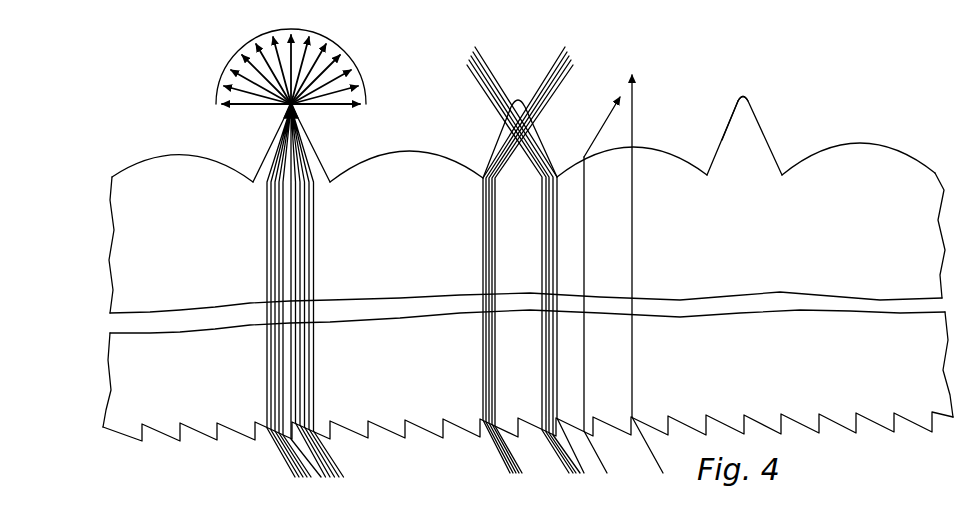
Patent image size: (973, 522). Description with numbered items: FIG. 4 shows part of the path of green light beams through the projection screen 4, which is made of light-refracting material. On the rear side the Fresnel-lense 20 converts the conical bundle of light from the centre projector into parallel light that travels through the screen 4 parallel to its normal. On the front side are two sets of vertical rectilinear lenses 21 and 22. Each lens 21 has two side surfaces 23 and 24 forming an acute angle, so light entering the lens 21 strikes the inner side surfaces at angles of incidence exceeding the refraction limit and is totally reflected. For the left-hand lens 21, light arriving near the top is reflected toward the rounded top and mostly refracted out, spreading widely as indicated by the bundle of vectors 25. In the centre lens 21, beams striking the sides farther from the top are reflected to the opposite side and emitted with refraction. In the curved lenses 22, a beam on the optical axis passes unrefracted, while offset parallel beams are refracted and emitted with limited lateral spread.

The screen 4 is at (922, 235).
The Fresnel-lense 20 is at (425, 430).
The lenses 21 is at (296, 158).
The lenses 22 is at (375, 165).
The side surface 23 is at (731, 118).
The side surface 24 is at (757, 117).
The bundle of vectors 25 is at (334, 52).